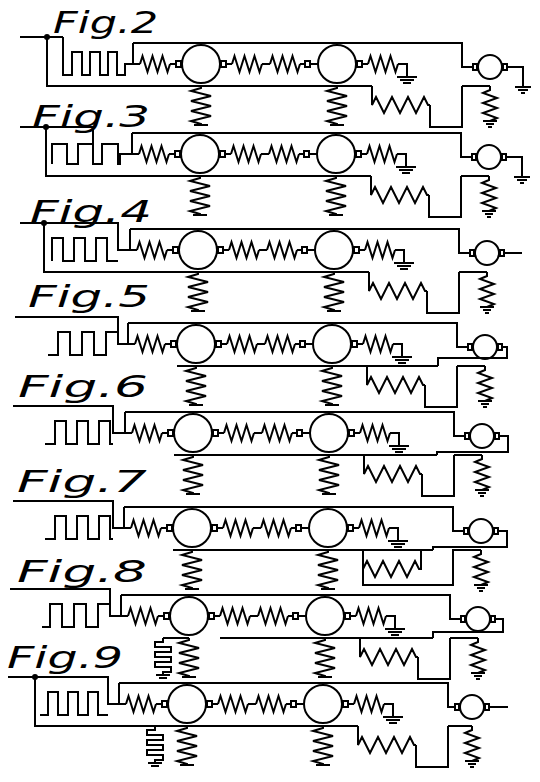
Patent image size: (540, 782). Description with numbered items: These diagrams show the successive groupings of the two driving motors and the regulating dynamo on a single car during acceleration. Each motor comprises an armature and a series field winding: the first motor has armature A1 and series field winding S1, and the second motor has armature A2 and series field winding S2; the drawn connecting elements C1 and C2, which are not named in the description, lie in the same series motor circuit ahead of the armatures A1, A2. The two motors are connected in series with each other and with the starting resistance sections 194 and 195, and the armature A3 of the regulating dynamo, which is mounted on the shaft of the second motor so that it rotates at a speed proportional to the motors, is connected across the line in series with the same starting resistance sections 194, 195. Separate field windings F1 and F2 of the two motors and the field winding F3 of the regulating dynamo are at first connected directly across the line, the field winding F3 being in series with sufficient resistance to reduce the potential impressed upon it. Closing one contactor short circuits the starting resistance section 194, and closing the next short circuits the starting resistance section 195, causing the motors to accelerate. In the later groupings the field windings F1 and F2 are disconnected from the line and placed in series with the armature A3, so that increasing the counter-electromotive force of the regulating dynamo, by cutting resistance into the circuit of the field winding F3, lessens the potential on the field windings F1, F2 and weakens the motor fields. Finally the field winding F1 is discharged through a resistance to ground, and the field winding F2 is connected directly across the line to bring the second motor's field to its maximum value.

In FIG. 2, the starting resistance section 194 is at (101, 56).
In FIG. 3, the starting resistance section 194 is at (95, 146).
In FIG. 4, the starting resistance section 194 is at (85, 242).
In FIG. 5, the starting resistance section 194 is at (83, 336).
In FIG. 6, the starting resistance section 194 is at (79, 425).
In FIG. 7, the starting resistance section 194 is at (79, 520).
In FIG. 8, the starting resistance section 194 is at (76, 608).
In FIG. 9, the starting resistance section 194 is at (74, 696).
In FIG. 2, the starting resistance section 195 is at (74, 45).
In FIG. 3, the starting resistance section 195 is at (73, 135).
In FIG. 4, the starting resistance section 195 is at (78, 236).
In FIG. 5, the starting resistance section 195 is at (75, 330).
In FIG. 6, the starting resistance section 195 is at (72, 419).
In FIG. 7, the starting resistance section 195 is at (72, 514).
In FIG. 8, the starting resistance section 195 is at (69, 602).
In FIG. 9, the starting resistance section 195 is at (67, 690).
In FIG. 2, the first coupling resistor C1 is at (155, 58).
In FIG. 3, the first coupling resistor C1 is at (154, 148).
In FIG. 4, the first coupling resistor C1 is at (152, 244).
In FIG. 5, the first coupling resistor C1 is at (150, 338).
In FIG. 6, the first coupling resistor C1 is at (147, 427).
In FIG. 7, the first coupling resistor C1 is at (146, 522).
In FIG. 8, the first coupling resistor C1 is at (143, 610).
In FIG. 9, the first coupling resistor C1 is at (141, 698).
In FIG. 2, the armature A1 is at (201, 64).
In FIG. 3, the armature A1 is at (200, 154).
In FIG. 4, the armature A1 is at (198, 250).
In FIG. 5, the armature A1 is at (196, 344).
In FIG. 6, the armature A1 is at (193, 433).
In FIG. 7, the armature A1 is at (192, 528).
In FIG. 8, the armature A1 is at (189, 616).
In FIG. 9, the armature A1 is at (187, 704).
In FIG. 2, the series field winding S1 is at (247, 58).
In FIG. 3, the series field winding S1 is at (246, 148).
In FIG. 4, the series field winding S1 is at (244, 244).
In FIG. 5, the series field winding S1 is at (242, 338).
In FIG. 6, the series field winding S1 is at (239, 427).
In FIG. 7, the series field winding S1 is at (238, 522).
In FIG. 8, the series field winding S1 is at (235, 610).
In FIG. 9, the series field winding S1 is at (233, 698).
In FIG. 2, the second coupling resistor C2 is at (291, 58).
In FIG. 3, the second coupling resistor C2 is at (290, 148).
In FIG. 4, the second coupling resistor C2 is at (288, 244).
In FIG. 5, the second coupling resistor C2 is at (286, 338).
In FIG. 6, the second coupling resistor C2 is at (283, 427).
In FIG. 7, the second coupling resistor C2 is at (282, 522).
In FIG. 8, the second coupling resistor C2 is at (279, 610).
In FIG. 9, the second coupling resistor C2 is at (277, 698).
In FIG. 2, the armature A2 is at (337, 64).
In FIG. 3, the armature A2 is at (336, 154).
In FIG. 4, the armature A2 is at (334, 250).
In FIG. 5, the armature A2 is at (332, 344).
In FIG. 6, the armature A2 is at (329, 433).
In FIG. 7, the armature A2 is at (328, 528).
In FIG. 8, the armature A2 is at (325, 616).
In FIG. 9, the armature A2 is at (323, 704).
In FIG. 2, the series field winding S2 is at (383, 58).
In FIG. 3, the series field winding S2 is at (382, 148).
In FIG. 4, the series field winding S2 is at (380, 244).
In FIG. 5, the series field winding S2 is at (378, 338).
In FIG. 6, the series field winding S2 is at (375, 427).
In FIG. 7, the series field winding S2 is at (374, 522).
In FIG. 8, the series field winding S2 is at (371, 610).
In FIG. 9, the series field winding S2 is at (369, 698).
In FIG. 2, the field winding F1 is at (211, 105).
In FIG. 3, the field winding F1 is at (210, 195).
In FIG. 4, the field winding F1 is at (208, 291).
In FIG. 5, the field winding F1 is at (206, 385).
In FIG. 6, the field winding F1 is at (203, 474).
In FIG. 7, the field winding F1 is at (202, 569).
In FIG. 8, the field winding F1 is at (199, 657).
In FIG. 9, the field winding F1 is at (197, 745).
In FIG. 2, the field winding F2 is at (325, 105).
In FIG. 3, the field winding F2 is at (324, 195).
In FIG. 4, the field winding F2 is at (322, 291).
In FIG. 5, the field winding F2 is at (320, 385).
In FIG. 6, the field winding F2 is at (317, 474).
In FIG. 7, the field winding F2 is at (316, 569).
In FIG. 8, the field winding F2 is at (313, 657).
In FIG. 9, the field winding F2 is at (311, 745).
In FIG. 2, the armature A3 is at (494, 60).
In FIG. 3, the armature A3 is at (493, 150).
In FIG. 4, the armature A3 is at (491, 246).
In FIG. 5, the armature A3 is at (489, 340).
In FIG. 6, the armature A3 is at (486, 429).
In FIG. 7, the armature A3 is at (485, 524).
In FIG. 8, the armature A3 is at (482, 612).
In FIG. 9, the armature A3 is at (476, 700).
In FIG. 2, the field winding F3 is at (500, 106).
In FIG. 3, the field winding F3 is at (499, 196).
In FIG. 4, the field winding F3 is at (497, 292).
In FIG. 5, the field winding F3 is at (495, 386).
In FIG. 6, the field winding F3 is at (492, 475).
In FIG. 7, the field winding F3 is at (491, 570).
In FIG. 8, the field winding F3 is at (488, 658).
In FIG. 9, the field winding F3 is at (482, 746).